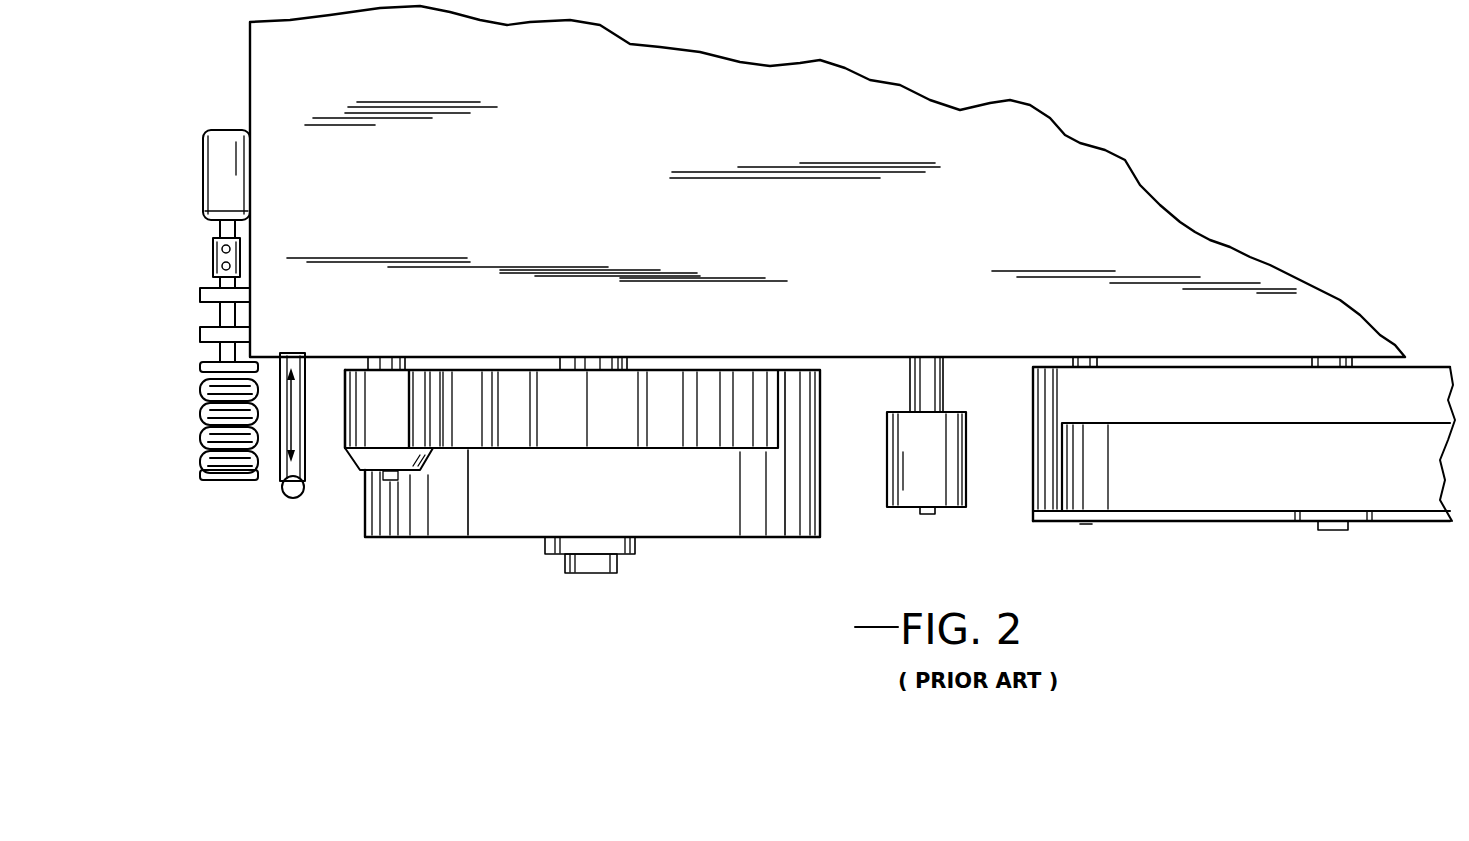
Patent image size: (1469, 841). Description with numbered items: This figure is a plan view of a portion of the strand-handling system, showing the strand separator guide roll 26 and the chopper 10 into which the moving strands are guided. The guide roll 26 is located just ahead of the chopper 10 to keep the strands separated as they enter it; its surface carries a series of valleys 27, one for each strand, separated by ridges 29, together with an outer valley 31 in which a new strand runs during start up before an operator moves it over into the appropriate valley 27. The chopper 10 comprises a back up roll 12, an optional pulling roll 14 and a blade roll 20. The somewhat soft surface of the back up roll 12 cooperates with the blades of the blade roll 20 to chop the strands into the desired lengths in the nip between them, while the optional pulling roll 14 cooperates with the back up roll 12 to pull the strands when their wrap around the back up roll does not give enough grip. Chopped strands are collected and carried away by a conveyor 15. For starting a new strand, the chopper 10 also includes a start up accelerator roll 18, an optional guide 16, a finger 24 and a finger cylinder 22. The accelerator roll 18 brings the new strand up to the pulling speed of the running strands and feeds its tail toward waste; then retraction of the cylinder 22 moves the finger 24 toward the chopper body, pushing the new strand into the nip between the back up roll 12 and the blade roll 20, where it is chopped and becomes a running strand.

The chopper 10 is at (250, 79).
The back up roll 12 is at (582, 455).
The pulling roll 14 is at (378, 392).
The conveyor 15 is at (1227, 431).
The guide 16 is at (893, 412).
The start up accelerator roll 18 is at (1085, 497).
The blade roll 20 is at (470, 386).
The finger cylinder 22 is at (280, 445).
The finger 24 is at (300, 491).
The strand separator guide roll 26 is at (190, 446).
The valley 27 is at (202, 380).
The ridge 29 is at (202, 442).
The outer valley 31 is at (202, 463).